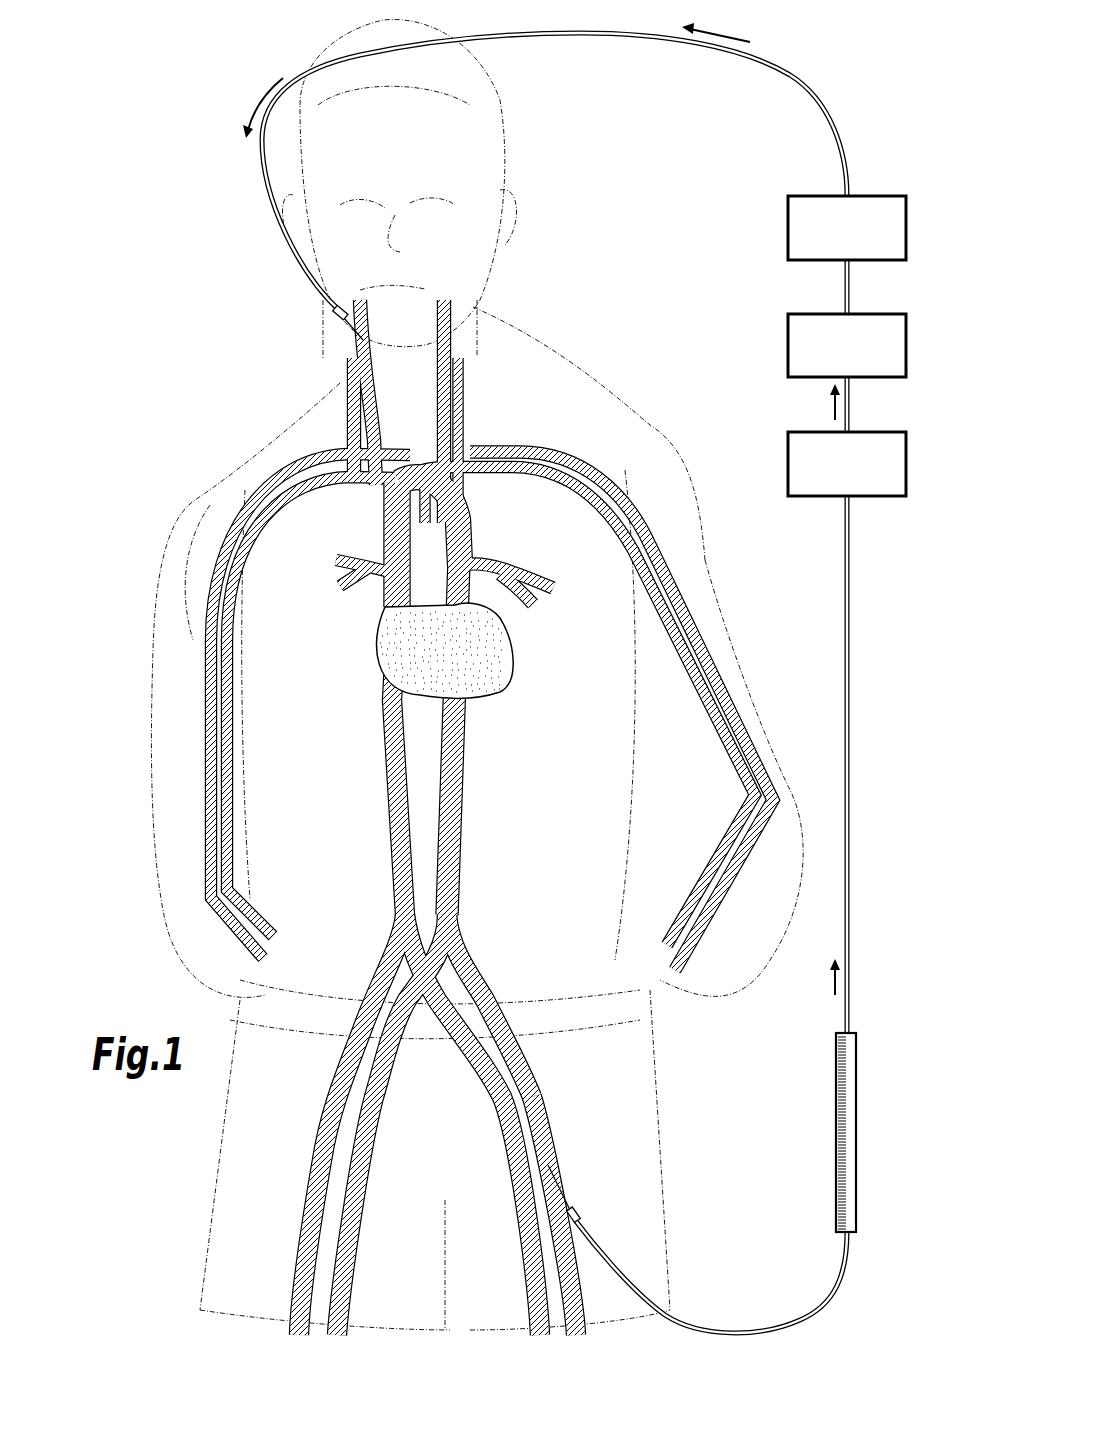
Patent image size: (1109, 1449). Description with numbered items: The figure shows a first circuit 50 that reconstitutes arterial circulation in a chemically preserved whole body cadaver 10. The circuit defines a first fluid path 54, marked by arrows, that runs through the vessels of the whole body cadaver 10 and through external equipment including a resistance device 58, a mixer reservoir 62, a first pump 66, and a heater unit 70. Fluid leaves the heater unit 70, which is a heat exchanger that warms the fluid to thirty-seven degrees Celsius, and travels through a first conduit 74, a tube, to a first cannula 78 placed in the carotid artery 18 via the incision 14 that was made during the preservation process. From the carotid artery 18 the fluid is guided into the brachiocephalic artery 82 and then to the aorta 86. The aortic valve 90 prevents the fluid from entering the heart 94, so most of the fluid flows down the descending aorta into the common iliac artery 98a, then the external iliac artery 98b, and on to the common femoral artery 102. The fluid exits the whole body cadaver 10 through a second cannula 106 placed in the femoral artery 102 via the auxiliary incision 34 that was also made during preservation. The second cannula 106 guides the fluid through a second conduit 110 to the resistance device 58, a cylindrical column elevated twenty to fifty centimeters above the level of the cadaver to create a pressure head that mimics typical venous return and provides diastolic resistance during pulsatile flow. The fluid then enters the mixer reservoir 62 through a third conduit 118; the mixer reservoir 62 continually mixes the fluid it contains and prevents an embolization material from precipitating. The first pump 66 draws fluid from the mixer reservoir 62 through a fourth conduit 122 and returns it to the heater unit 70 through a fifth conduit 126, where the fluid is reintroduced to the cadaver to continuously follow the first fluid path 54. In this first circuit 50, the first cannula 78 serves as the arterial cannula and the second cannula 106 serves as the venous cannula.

The whole body cadaver 10 is at (575, 368).
The incision 14 is at (363, 329).
The carotid artery 18 is at (375, 372).
The auxiliary incision 34 is at (558, 1174).
The first circuit 50 is at (801, 64).
The first fluid path 54 is at (281, 78).
The resistance device 58 is at (836, 1127).
The mixer reservoir 62 is at (787, 462).
The first pump 66 is at (787, 345).
The heater unit 70 is at (787, 227).
The first conduit 74 is at (585, 34).
The first cannula 78 is at (336, 320).
The brachiocephalic artery 82 is at (393, 521).
The aorta 86 is at (470, 531).
The aortic valve 90 is at (385, 636).
The heart 94 is at (500, 651).
The common iliac artery 98a is at (456, 869).
The external iliac artery 98b is at (494, 1002).
The femoral artery 102 is at (553, 1149).
The second cannula 106 is at (578, 1212).
The second conduit 110 is at (823, 1305).
The third conduit 118 is at (840, 531).
The fourth conduit 122 is at (849, 405).
The fifth conduit 126 is at (849, 291).